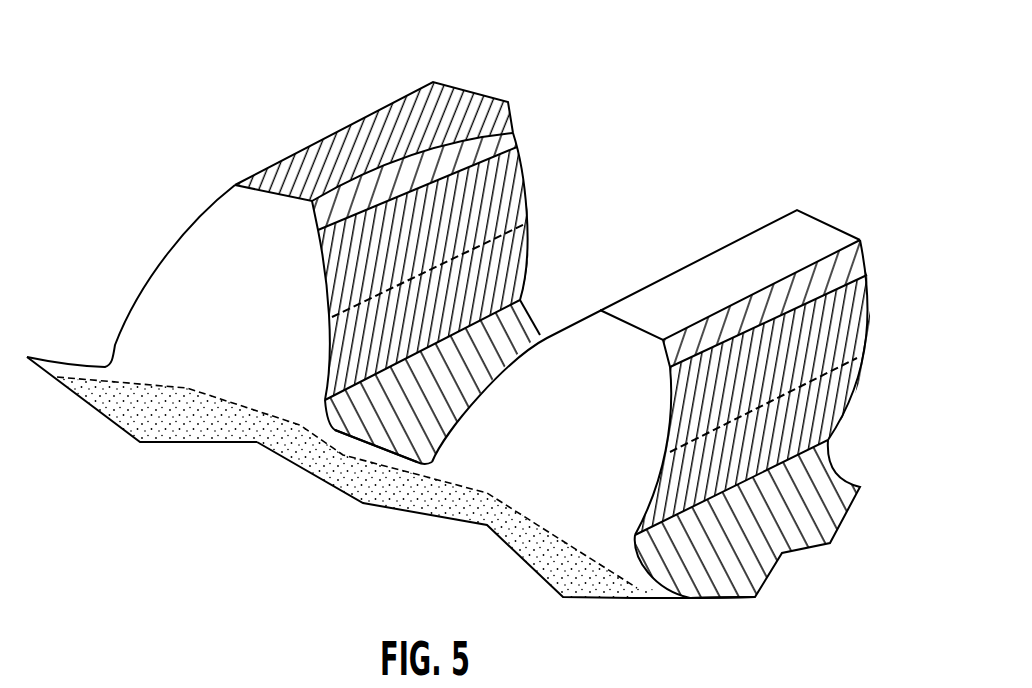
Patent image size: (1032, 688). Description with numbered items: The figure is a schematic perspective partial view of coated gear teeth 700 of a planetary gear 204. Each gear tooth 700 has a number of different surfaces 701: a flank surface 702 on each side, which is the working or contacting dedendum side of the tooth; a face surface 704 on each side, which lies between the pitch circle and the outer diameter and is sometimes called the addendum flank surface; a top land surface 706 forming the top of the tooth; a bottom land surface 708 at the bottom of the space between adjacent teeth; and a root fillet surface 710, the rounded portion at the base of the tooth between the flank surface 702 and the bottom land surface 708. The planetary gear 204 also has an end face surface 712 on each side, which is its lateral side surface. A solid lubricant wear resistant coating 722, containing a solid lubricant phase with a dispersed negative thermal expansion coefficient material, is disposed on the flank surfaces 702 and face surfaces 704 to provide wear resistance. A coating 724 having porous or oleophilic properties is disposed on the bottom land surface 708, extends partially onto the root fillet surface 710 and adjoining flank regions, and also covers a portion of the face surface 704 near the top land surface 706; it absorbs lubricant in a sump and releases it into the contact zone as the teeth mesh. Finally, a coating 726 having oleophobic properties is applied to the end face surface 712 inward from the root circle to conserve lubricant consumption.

The planetary gear 204 is at (690, 100).
The gear tooth 700 is at (220, 152).
The surfaces 701 is at (107, 302).
The flank surface 702 is at (530, 237).
The face surface 704 is at (530, 192).
The top land surface 706 is at (423, 100).
The bottom land surface 708 is at (370, 430).
The root fillet surface 710 is at (315, 415).
The end face surface 712 is at (143, 363).
The solid lubricant wear resistant coating 722 is at (522, 180).
The coating having porous or oleophilic properties 724 is at (463, 107).
The coating having oleophobic properties 726 is at (140, 415).